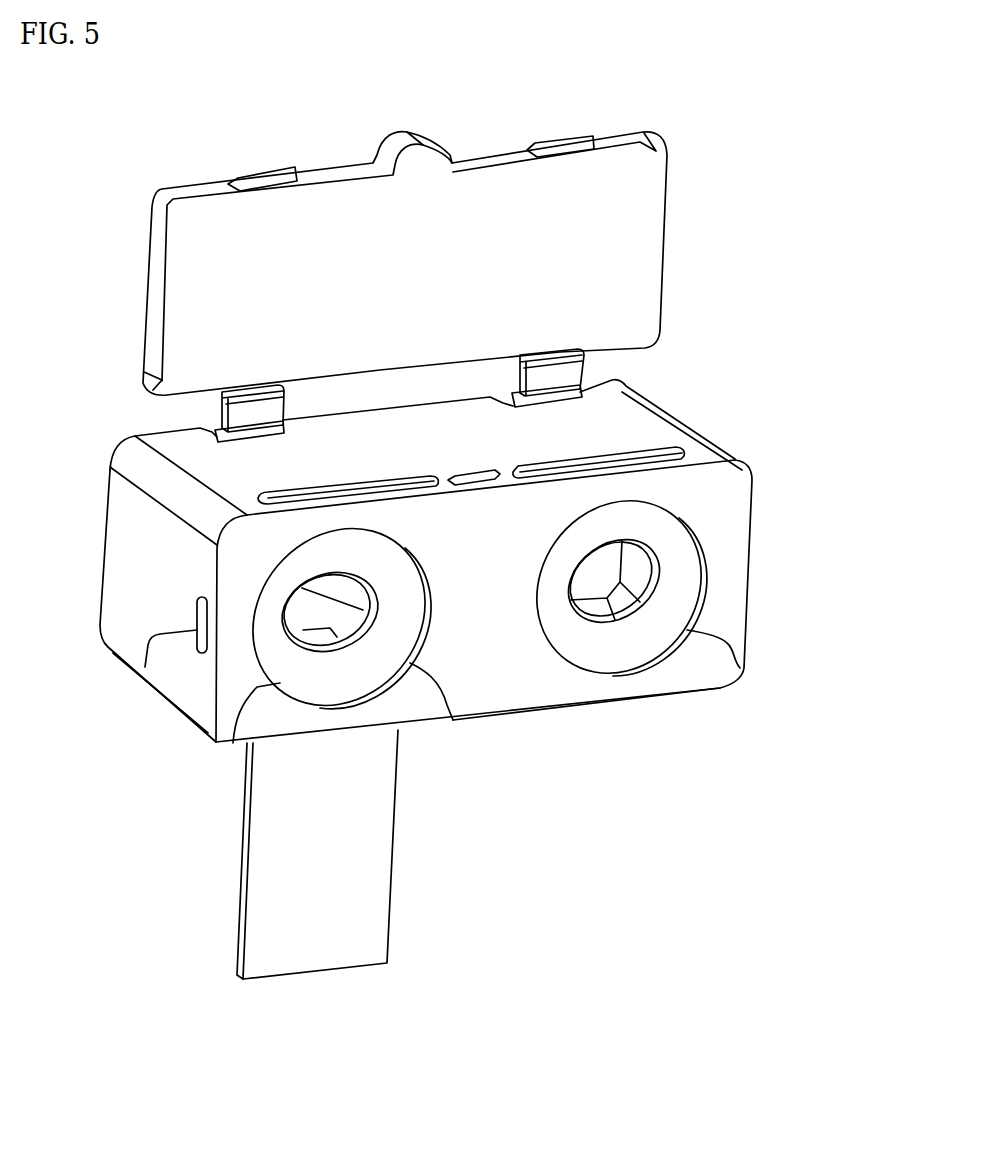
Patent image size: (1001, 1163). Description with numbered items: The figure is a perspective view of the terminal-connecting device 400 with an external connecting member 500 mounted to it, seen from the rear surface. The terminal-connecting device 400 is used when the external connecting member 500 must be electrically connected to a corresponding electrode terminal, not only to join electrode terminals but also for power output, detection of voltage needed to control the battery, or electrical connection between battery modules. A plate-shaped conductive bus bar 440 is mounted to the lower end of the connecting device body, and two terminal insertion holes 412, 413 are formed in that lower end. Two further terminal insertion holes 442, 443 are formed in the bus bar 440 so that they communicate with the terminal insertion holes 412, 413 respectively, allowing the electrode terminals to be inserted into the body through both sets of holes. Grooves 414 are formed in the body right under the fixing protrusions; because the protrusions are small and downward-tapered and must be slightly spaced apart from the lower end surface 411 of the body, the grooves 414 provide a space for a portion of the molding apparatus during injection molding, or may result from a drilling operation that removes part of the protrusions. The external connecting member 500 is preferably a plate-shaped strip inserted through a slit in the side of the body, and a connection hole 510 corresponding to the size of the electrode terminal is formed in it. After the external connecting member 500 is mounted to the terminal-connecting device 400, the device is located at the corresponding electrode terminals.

The terminal-connecting device 400 is at (690, 423).
The lower end surface 411 is at (627, 688).
The terminal insertion hole 412 is at (453, 720).
The terminal insertion hole 413 is at (740, 668).
The groove 414 is at (140, 666).
The bus bar 440 is at (293, 672).
The terminal insertion hole 442 is at (377, 607).
The terminal insertion hole 443 is at (660, 577).
The external connecting member 500 is at (367, 922).
The connection hole 510 is at (267, 590).